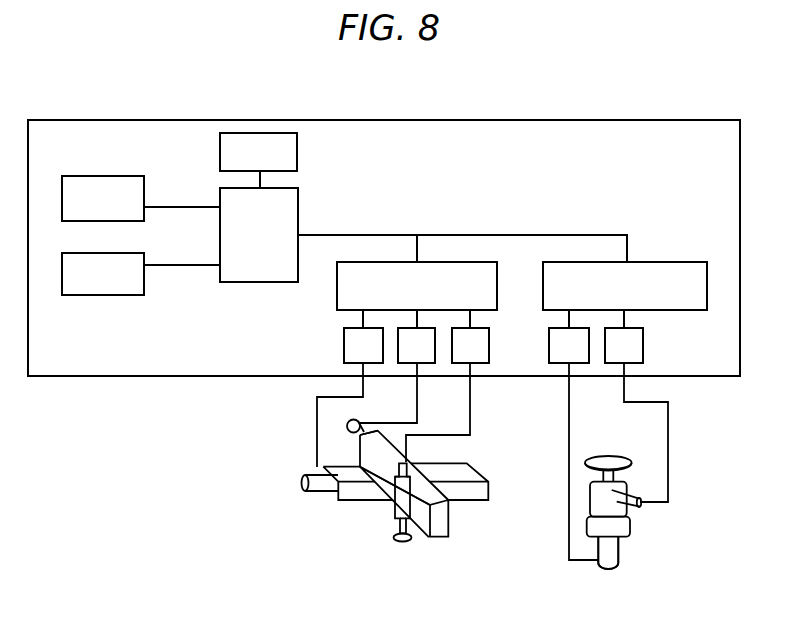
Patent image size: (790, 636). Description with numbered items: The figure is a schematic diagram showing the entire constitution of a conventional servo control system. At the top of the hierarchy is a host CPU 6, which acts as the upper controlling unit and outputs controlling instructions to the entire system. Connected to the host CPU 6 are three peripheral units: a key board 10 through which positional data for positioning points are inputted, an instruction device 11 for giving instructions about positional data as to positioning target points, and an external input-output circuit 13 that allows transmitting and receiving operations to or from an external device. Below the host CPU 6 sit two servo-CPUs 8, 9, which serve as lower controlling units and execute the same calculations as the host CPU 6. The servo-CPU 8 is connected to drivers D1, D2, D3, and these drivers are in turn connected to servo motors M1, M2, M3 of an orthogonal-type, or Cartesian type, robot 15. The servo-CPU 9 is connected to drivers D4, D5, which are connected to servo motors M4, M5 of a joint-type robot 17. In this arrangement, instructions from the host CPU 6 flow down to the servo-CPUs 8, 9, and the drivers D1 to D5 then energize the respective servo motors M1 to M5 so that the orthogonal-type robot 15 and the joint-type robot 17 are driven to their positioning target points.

The host CPU 6 is at (298, 210).
The servo-CPU 8 is at (337, 288).
The servo-CPU 9 is at (668, 262).
The key board 10 is at (104, 176).
The instruction device 11 is at (103, 296).
The external input-output circuit 13 is at (298, 152).
The orthogonal-type robot 15 is at (365, 524).
The joint-type robot 17 is at (664, 518).
The driver D1 is at (363, 345).
The driver D2 is at (416, 345).
The driver D3 is at (470, 345).
The driver D4 is at (569, 345).
The driver D5 is at (624, 345).
The servo motor M1 is at (318, 493).
The servo motor M2 is at (360, 422).
The servo motor M3 is at (412, 465).
The servo motor M4 is at (622, 548).
The servo motor M5 is at (633, 487).